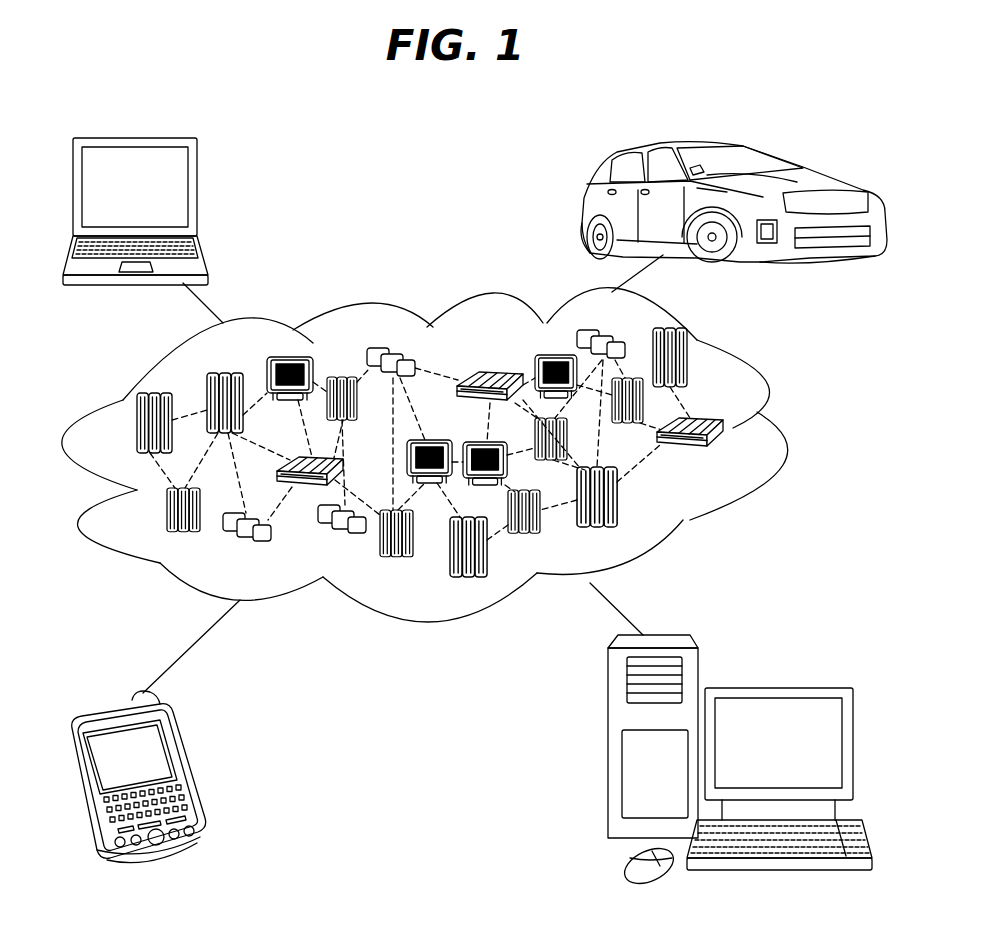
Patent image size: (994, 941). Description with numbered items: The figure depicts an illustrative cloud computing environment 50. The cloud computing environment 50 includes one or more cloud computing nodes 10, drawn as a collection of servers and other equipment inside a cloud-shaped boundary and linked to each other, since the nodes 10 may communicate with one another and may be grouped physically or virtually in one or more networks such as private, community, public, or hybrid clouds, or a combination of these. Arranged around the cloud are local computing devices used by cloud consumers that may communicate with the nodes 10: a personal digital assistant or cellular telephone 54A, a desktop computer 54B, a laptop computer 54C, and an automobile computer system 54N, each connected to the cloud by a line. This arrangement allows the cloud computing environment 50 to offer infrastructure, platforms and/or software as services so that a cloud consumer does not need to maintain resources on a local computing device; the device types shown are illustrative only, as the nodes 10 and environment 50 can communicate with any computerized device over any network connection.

The cloud computing nodes 10 is at (475, 452).
The cloud computing environment 50 is at (770, 437).
The personal digital assistant or cellular telephone 54A is at (188, 770).
The desktop computer 54B is at (775, 687).
The laptop computer 54C is at (198, 192).
The automobile computer system 54N is at (584, 207).